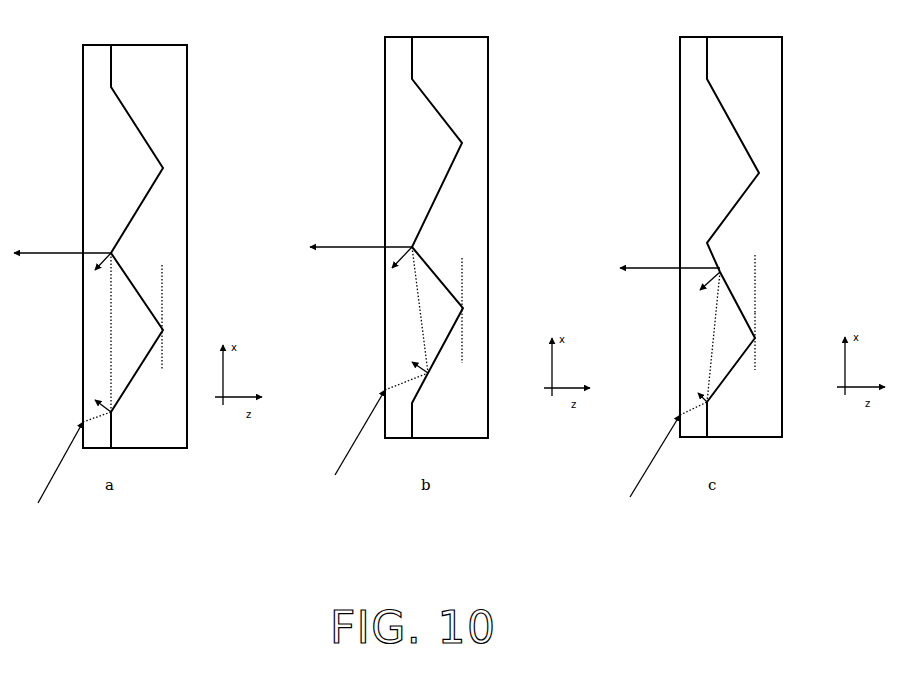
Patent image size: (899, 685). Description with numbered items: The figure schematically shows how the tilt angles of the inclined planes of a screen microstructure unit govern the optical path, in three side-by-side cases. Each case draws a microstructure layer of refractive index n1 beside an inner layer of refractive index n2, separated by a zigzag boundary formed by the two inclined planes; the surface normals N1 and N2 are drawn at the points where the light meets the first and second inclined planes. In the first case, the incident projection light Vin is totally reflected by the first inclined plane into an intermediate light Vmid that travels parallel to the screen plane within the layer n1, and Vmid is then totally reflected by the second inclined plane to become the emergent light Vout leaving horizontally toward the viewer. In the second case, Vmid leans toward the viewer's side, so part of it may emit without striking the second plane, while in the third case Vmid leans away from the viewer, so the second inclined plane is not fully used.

The refractive index of the microstructure layer n1 is at (432, 242).
The refractive index of the inner layer n2 is at (435, 242).
The emergent light Vout is at (38, 236).
The intermediate light Vmid is at (120, 311).
The incident projection light Vin is at (42, 471).
The surface normal at entrance facet N1 is at (82, 390).
The surface normal at exit facet N2 is at (82, 272).